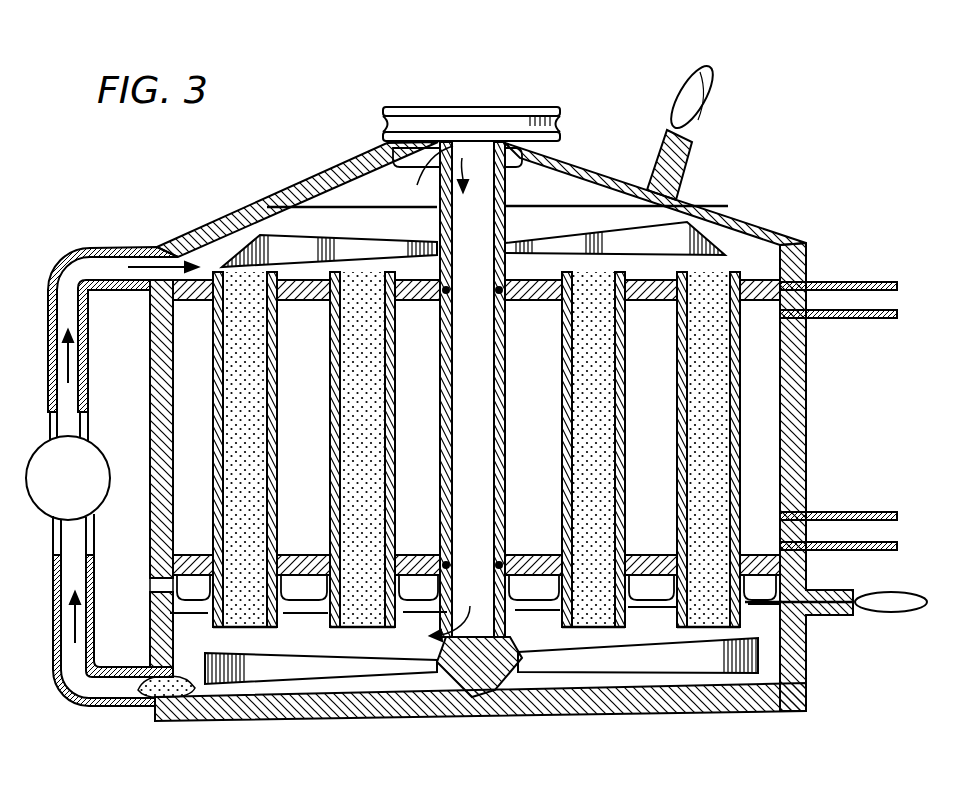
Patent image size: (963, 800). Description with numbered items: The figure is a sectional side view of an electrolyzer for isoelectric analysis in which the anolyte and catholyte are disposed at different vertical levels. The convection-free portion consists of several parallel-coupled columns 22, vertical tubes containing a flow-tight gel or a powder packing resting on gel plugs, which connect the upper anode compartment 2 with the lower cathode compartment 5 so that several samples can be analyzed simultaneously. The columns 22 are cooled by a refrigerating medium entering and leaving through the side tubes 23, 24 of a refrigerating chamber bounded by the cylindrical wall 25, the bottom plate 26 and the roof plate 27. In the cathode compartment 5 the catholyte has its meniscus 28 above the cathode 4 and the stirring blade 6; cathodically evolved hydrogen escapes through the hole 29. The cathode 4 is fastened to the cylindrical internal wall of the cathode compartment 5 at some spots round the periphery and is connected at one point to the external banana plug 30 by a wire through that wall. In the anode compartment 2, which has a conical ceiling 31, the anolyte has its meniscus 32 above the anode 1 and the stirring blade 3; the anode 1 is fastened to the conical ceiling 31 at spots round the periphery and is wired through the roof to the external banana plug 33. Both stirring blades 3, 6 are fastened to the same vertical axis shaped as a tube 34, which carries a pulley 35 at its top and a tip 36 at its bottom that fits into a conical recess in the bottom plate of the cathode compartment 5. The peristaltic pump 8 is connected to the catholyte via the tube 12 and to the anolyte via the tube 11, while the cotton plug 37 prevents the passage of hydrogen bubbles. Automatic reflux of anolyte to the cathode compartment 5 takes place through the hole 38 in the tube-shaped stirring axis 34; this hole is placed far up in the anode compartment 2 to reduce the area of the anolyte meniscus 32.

The anode 1 is at (332, 200).
The anode compartment 2 is at (394, 203).
The stirring blade 3 is at (692, 231).
The cathode 4 is at (197, 614).
The cathode compartment 5 is at (300, 653).
The stirring blade 6 is at (728, 662).
The peristaltic pump 8 is at (42, 455).
The tube 11 is at (66, 304).
The tube 12 is at (112, 686).
The columns 22 is at (258, 448).
The side tube 23 is at (845, 295).
The side tube 24 is at (858, 528).
The cylindrical wall 25 is at (808, 417).
The bottom plate 26 is at (292, 718).
The roof plate 27 is at (206, 300).
The catholyte meniscus 28 is at (197, 600).
The hole 29 is at (160, 587).
The external banana plug 30 is at (903, 594).
The conical ceiling 31 is at (237, 215).
The anolyte meniscus 32 is at (403, 163).
The external banana plug 33 is at (706, 95).
The tube-shaped stirring axis 34 is at (494, 366).
The pulley 35 is at (397, 107).
The tip 36 is at (455, 680).
The cotton plug 37 is at (145, 692).
The hole 38 is at (462, 142).